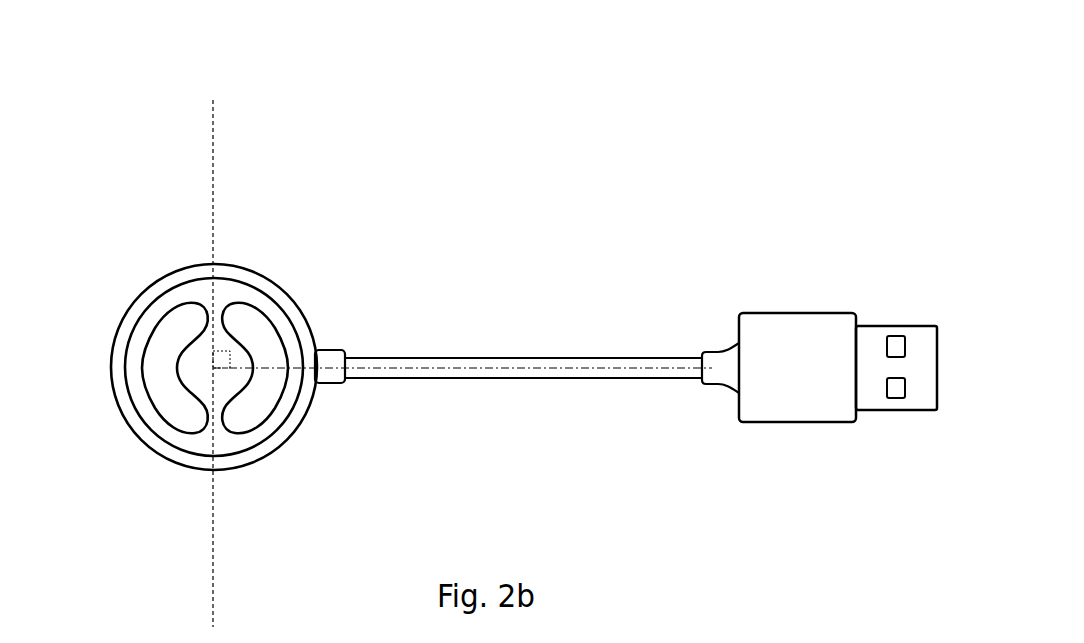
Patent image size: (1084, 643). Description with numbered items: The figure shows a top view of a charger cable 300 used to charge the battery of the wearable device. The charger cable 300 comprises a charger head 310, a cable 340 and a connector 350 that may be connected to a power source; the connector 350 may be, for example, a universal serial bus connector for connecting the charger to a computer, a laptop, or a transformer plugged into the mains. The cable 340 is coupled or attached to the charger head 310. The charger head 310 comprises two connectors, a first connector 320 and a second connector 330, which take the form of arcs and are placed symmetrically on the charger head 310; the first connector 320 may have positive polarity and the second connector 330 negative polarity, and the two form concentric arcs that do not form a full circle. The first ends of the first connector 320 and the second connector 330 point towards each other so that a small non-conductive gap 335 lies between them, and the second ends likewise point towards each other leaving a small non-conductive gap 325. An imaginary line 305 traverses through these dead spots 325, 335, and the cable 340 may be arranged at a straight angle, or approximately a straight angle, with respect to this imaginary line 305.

The charger cable 300 is at (558, 300).
The imaginary line 305 is at (213, 100).
The charger head 310 is at (292, 298).
The first connector 320 is at (170, 332).
The non-conductive gap 325 is at (212, 422).
The second connector 330 is at (247, 330).
The non-conductive gap 335 is at (216, 304).
The cable 340 is at (496, 379).
The connector 350 is at (920, 397).